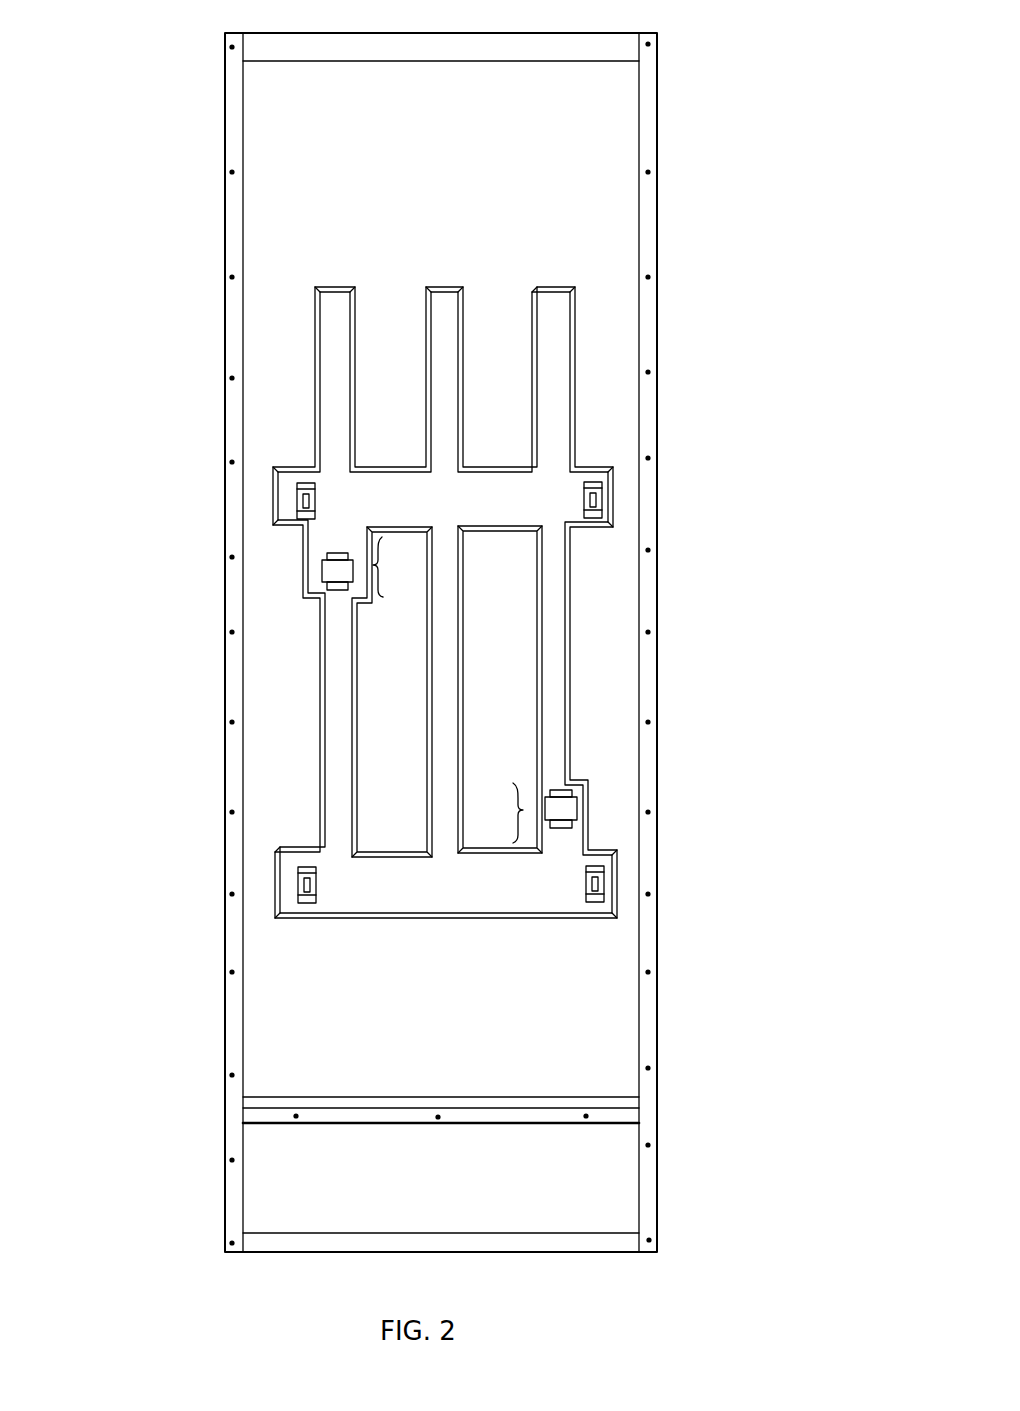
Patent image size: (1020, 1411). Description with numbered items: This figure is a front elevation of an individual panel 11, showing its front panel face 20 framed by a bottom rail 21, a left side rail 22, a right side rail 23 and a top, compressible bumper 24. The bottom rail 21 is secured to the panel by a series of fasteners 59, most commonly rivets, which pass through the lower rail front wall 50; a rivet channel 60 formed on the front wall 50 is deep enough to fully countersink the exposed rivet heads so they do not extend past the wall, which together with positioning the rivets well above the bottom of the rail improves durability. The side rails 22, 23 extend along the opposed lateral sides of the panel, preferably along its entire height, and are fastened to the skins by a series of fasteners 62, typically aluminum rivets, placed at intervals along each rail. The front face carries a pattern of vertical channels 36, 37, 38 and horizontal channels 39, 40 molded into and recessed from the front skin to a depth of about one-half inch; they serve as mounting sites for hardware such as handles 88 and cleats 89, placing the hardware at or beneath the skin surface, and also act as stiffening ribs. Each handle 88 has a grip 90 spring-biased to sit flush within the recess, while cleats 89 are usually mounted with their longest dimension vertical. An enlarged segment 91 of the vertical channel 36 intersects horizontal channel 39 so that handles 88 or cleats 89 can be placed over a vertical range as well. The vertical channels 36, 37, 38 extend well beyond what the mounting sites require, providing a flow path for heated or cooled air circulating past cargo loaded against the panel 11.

The panel 11 is at (660, 128).
The front panel face 20 is at (452, 160).
The bottom rail 21 is at (620, 1170).
The left side rail 22 is at (230, 1000).
The right side rail 23 is at (653, 940).
The compressible bumper 24 is at (450, 50).
The vertical channel 36 is at (330, 287).
The vertical channel 37 is at (440, 287).
The vertical channel 38 is at (555, 287).
The horizontal channel 39 is at (616, 465).
The horizontal channel 40 is at (620, 897).
The lower rail front wall 50 is at (265, 1213).
The fasteners 59 is at (298, 1117).
The rivet channel 60 is at (270, 1120).
The fasteners 62 is at (230, 560).
The handles 88 is at (720, 755).
The cleats 89 is at (296, 505).
The grip 90 is at (340, 587).
The enlarged segment 91 is at (378, 565).